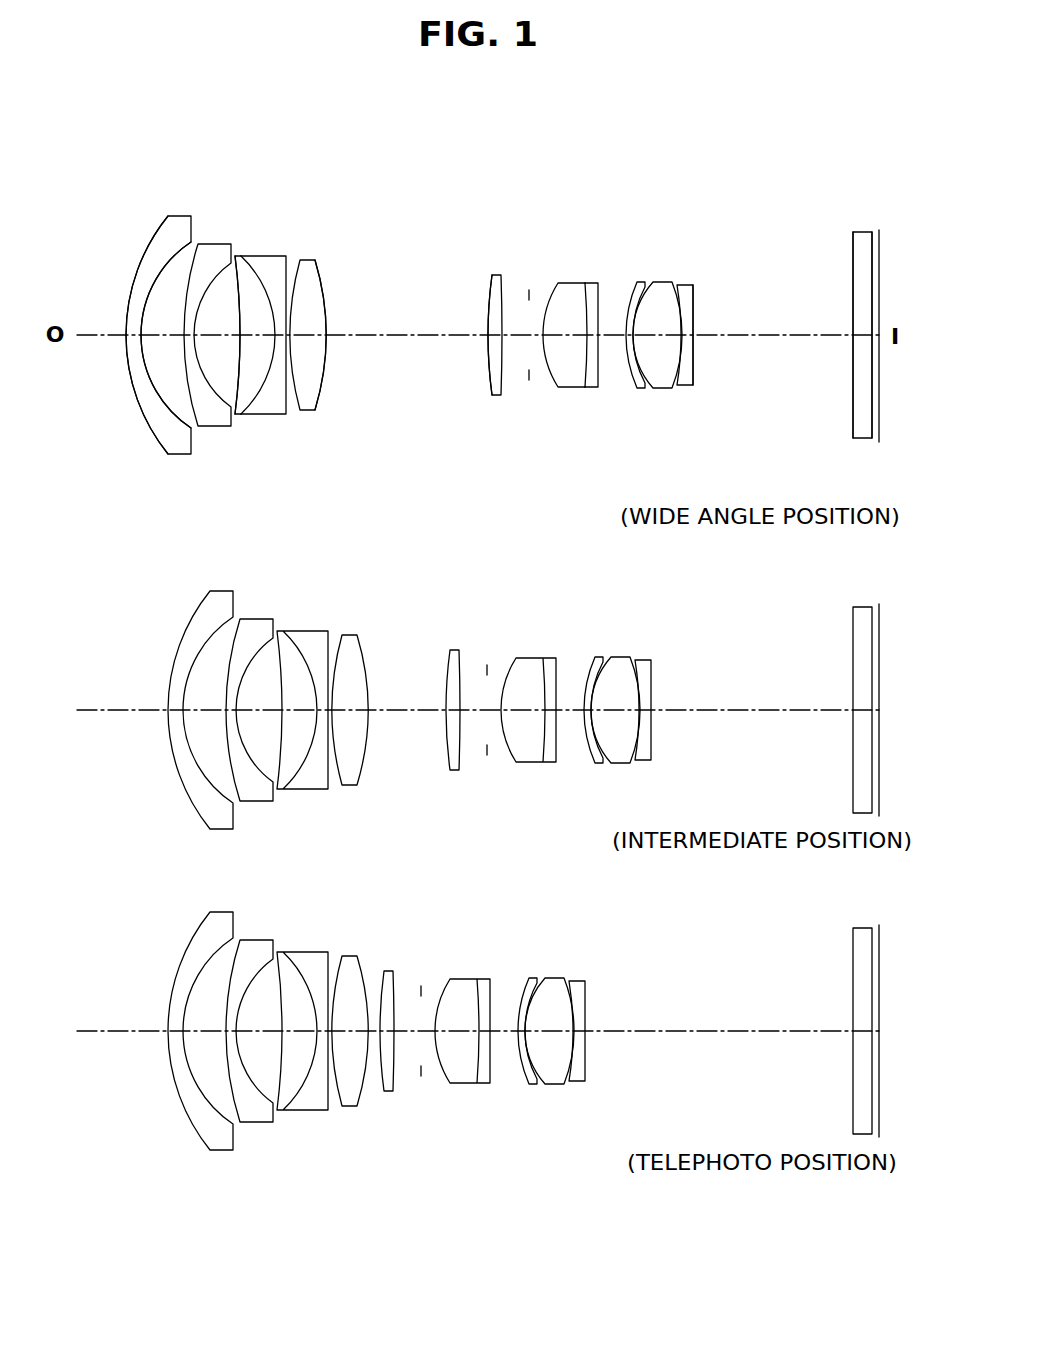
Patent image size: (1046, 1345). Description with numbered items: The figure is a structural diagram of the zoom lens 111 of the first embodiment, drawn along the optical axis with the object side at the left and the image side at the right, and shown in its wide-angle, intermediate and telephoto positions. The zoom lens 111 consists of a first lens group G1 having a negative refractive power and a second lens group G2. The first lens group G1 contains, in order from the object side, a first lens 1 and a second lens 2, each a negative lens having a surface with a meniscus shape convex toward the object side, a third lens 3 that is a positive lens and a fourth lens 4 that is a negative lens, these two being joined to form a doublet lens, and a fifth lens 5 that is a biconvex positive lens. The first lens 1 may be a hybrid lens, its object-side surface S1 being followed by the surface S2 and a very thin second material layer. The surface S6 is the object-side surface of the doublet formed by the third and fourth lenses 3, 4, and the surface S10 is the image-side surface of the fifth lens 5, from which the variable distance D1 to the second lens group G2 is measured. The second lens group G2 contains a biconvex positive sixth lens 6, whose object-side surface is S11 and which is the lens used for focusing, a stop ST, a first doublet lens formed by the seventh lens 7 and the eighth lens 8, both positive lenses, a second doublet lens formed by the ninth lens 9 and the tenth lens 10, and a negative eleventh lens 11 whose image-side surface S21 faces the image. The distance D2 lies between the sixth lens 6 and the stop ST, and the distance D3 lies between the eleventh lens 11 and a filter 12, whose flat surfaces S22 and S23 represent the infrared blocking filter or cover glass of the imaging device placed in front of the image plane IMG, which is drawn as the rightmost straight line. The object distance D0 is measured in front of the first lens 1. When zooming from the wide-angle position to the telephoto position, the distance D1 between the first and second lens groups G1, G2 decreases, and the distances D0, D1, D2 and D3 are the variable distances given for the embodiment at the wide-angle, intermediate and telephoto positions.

The first lens 1 is at (165, 362).
The second lens 2 is at (211, 366).
The third lens 3 is at (255, 364).
The fourth lens 4 is at (274, 364).
The fifth lens 5 is at (317, 358).
The sixth lens 6 is at (484, 365).
The seventh lens 7 is at (565, 367).
The eighth lens 8 is at (596, 367).
The ninth lens 9 is at (635, 367).
The tenth lens 10 is at (657, 367).
The eleventh lens 11 is at (696, 369).
The filter 12 is at (855, 436).
The zoom lens 111 is at (757, 486).
The first lens group G1 is at (326, 148).
The second lens group G2 is at (690, 148).
The stop ST is at (516, 372).
The image plane IMG is at (879, 222).
The object-side surface of the first lens S1 is at (169, 206).
The second surface of the first lens S2 is at (175, 289).
The object-side surface of the third lens S6 is at (236, 243).
The image-side surface of the fifth lens S10 is at (314, 250).
The object-side surface of the sixth lens S11 is at (490, 266).
The image-side surface of the eleventh lens S21 is at (692, 274).
The object-side surface of the filter S22 is at (853, 222).
The image-side surface of the filter S23 is at (873, 222).
The object distance D0 is at (99, 333).
The distance between the first and second lens groups D1 is at (409, 333).
The distance between the sixth lens and the stop D2 is at (514, 333).
The distance between the eleventh lens and the filter D3 is at (777, 333).